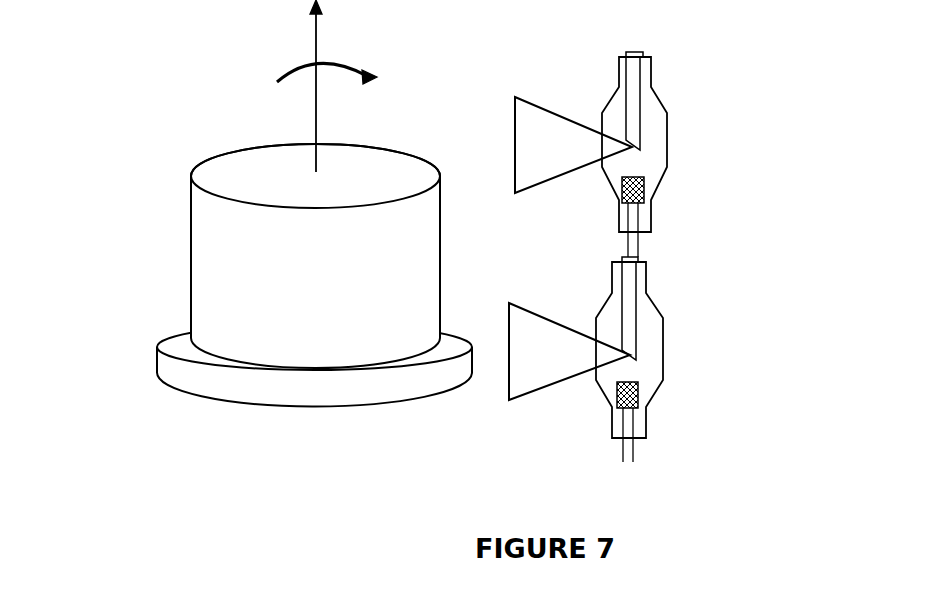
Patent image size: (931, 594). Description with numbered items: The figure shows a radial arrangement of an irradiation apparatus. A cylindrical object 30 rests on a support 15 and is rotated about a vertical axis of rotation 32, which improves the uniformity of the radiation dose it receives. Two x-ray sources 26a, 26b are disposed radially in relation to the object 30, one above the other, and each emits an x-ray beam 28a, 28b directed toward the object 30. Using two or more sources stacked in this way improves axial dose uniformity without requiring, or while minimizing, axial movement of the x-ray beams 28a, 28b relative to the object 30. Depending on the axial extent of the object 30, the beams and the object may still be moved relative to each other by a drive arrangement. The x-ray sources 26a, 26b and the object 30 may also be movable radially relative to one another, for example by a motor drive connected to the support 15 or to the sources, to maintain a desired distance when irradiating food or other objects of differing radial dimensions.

The support 15 is at (278, 406).
The object 30 is at (191, 272).
The axis of rotation 32 is at (301, 86).
The x-ray source 26a is at (673, 113).
The x-ray source 26b is at (675, 385).
The x-ray beam 28a is at (537, 177).
The x-ray beam 28b is at (535, 375).